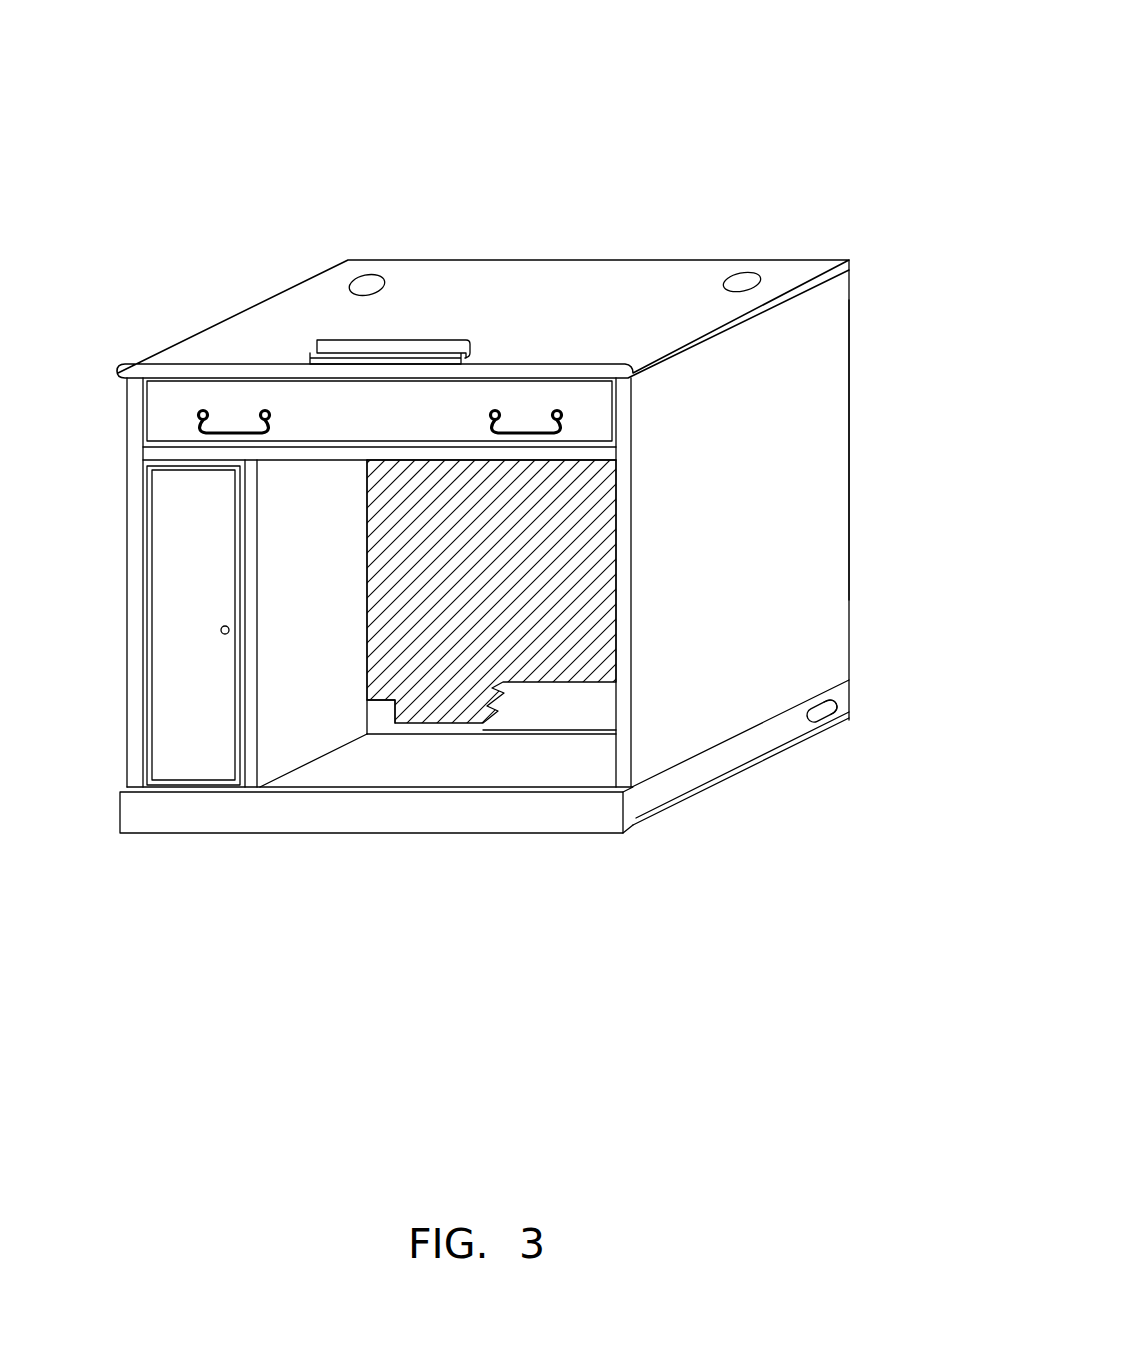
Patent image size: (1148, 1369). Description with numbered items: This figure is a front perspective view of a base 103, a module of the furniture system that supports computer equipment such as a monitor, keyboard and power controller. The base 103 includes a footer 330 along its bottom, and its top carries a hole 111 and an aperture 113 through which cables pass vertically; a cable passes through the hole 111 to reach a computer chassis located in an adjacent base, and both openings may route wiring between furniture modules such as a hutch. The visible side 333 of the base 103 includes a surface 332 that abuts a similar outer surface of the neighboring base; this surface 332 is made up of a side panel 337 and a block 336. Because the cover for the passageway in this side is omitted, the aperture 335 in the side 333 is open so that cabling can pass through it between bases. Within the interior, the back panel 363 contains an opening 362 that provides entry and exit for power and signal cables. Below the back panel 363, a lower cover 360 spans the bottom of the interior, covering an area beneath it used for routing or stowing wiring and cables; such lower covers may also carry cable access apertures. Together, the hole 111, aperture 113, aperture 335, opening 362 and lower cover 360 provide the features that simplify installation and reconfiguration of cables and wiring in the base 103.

The base 103 is at (627, 72).
The hole 111 is at (367, 275).
The aperture 113 is at (742, 273).
The footer 330 is at (500, 836).
The surface 332 is at (745, 512).
The side 333 is at (745, 838).
The aperture 335 is at (823, 722).
The block 336 is at (755, 772).
The side panel 337 is at (851, 460).
The lower cover 360 is at (580, 733).
The opening 362 is at (367, 700).
The back panel 363 is at (517, 634).